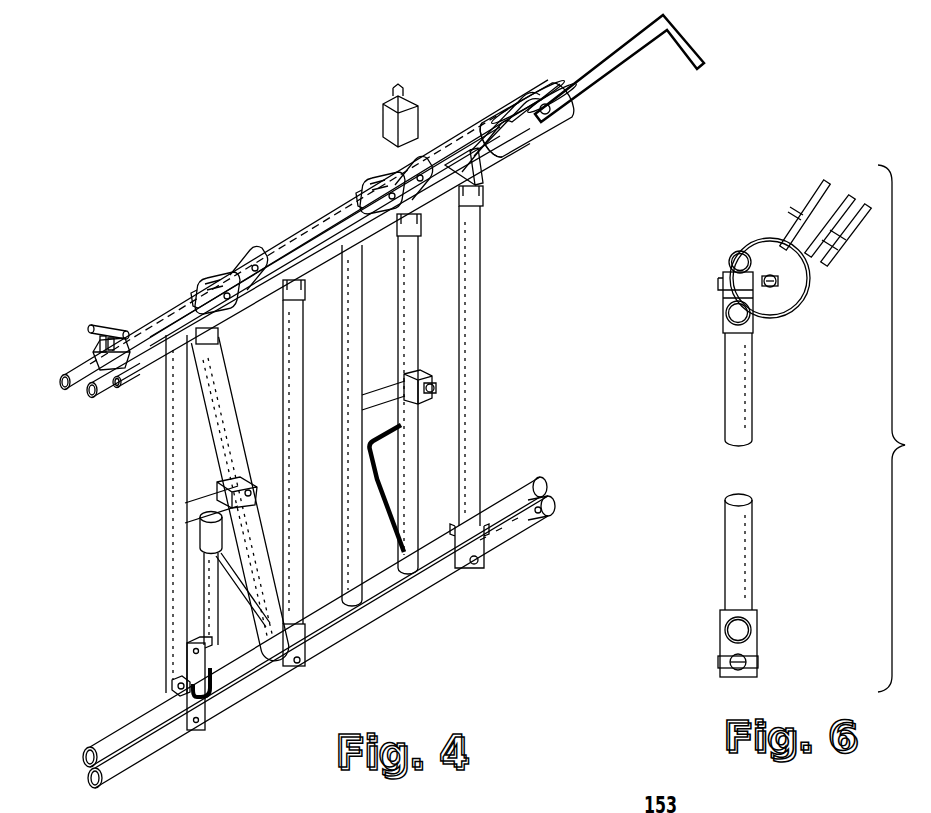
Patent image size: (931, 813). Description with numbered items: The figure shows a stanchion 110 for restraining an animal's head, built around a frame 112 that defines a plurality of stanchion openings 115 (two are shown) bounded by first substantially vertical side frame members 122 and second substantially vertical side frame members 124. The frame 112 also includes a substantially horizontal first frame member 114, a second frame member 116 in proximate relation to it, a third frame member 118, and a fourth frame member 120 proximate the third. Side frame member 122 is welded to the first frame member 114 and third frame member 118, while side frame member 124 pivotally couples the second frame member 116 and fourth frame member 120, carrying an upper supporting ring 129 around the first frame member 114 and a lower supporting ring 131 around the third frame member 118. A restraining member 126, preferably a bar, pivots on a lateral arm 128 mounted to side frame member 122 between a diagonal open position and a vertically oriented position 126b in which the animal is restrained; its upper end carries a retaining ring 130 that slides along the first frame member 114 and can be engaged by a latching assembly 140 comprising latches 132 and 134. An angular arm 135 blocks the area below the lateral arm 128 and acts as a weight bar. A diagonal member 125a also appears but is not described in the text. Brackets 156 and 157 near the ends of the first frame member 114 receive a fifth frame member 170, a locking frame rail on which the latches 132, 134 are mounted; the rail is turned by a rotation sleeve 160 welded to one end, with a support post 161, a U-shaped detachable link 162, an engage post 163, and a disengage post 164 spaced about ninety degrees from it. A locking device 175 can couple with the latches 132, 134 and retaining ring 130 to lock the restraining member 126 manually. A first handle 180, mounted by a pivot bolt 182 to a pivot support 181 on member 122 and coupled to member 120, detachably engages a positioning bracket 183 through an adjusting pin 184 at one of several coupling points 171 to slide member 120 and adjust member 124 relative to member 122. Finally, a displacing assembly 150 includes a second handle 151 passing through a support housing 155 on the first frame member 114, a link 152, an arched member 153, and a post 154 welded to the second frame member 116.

In FIG. 4, the stanchion 110 is at (243, 140).
In FIG. 4, the frame 112 is at (495, 207).
In FIG. 4, the first frame member 114 is at (82, 386).
In FIG. 6, the first frame member 114 is at (730, 312).
In FIG. 4, the stanchion openings 115 is at (449, 310).
In FIG. 4, the second frame member 116 is at (152, 380).
In FIG. 6, the second frame member 116 is at (776, 300).
In FIG. 4, the third frame member 118 is at (540, 483).
In FIG. 4, the fourth frame member 120 is at (348, 640).
In FIG. 4, the first substantially vertical extending side frame member 122 is at (358, 345).
In FIG. 4, the second substantially vertical extending side frame member 124 is at (481, 308).
In FIG. 4, the diagonal brace 125a is at (240, 452).
In FIG. 4, the restraining member 126 is at (430, 378).
In FIG. 4, the vertically oriented position 126b is at (435, 388).
In FIG. 4, the lateral arm 128 is at (382, 400).
In FIG. 4, the upper supporting ring 129 is at (484, 195).
In FIG. 4, the retaining ring 130 is at (420, 235).
In FIG. 4, the lower supporting ring 131 is at (460, 550).
In FIG. 4, the latch 132 is at (388, 185).
In FIG. 4, the latch 134 is at (407, 160).
In FIG. 4, the angular arm 135 is at (392, 466).
In FIG. 4, the latching assembly 140 is at (366, 138).
In FIG. 4, the displacing assembly 150 is at (552, 77).
In FIG. 4, the second handle 151 is at (628, 60).
In FIG. 6, the second handle 151 is at (868, 208).
In FIG. 4, the link 152 is at (540, 92).
In FIG. 4, the arched member 153 is at (505, 148).
In FIG. 4, the post 154 is at (447, 162).
In FIG. 4, the support housing 155 is at (552, 140).
In FIG. 6, the support housing 155 is at (810, 290).
In FIG. 4, the bracket 156 is at (482, 556).
In FIG. 4, the bracket 157 is at (510, 172).
In FIG. 4, the rotation sleeve 160 is at (90, 350).
In FIG. 4, the support post 161 is at (128, 335).
In FIG. 4, the U-shaped detachable link 162 is at (104, 337).
In FIG. 4, the engage post 163 is at (97, 342).
In FIG. 4, the disengage post 164 is at (112, 397).
In FIG. 4, the fifth frame member 170 is at (302, 242).
In FIG. 6, the fifth frame member 170 is at (731, 258).
In FIG. 4, the coupling points 171 is at (214, 660).
In FIG. 4, the locking device 175 is at (400, 162).
In FIG. 4, the first handle 180 is at (203, 590).
In FIG. 4, the pivot support 181 is at (178, 662).
In FIG. 4, the pivot bolt 182 is at (190, 645).
In FIG. 4, the positioning bracket 183 is at (172, 688).
In FIG. 4, the adjusting pin 184 is at (214, 700).